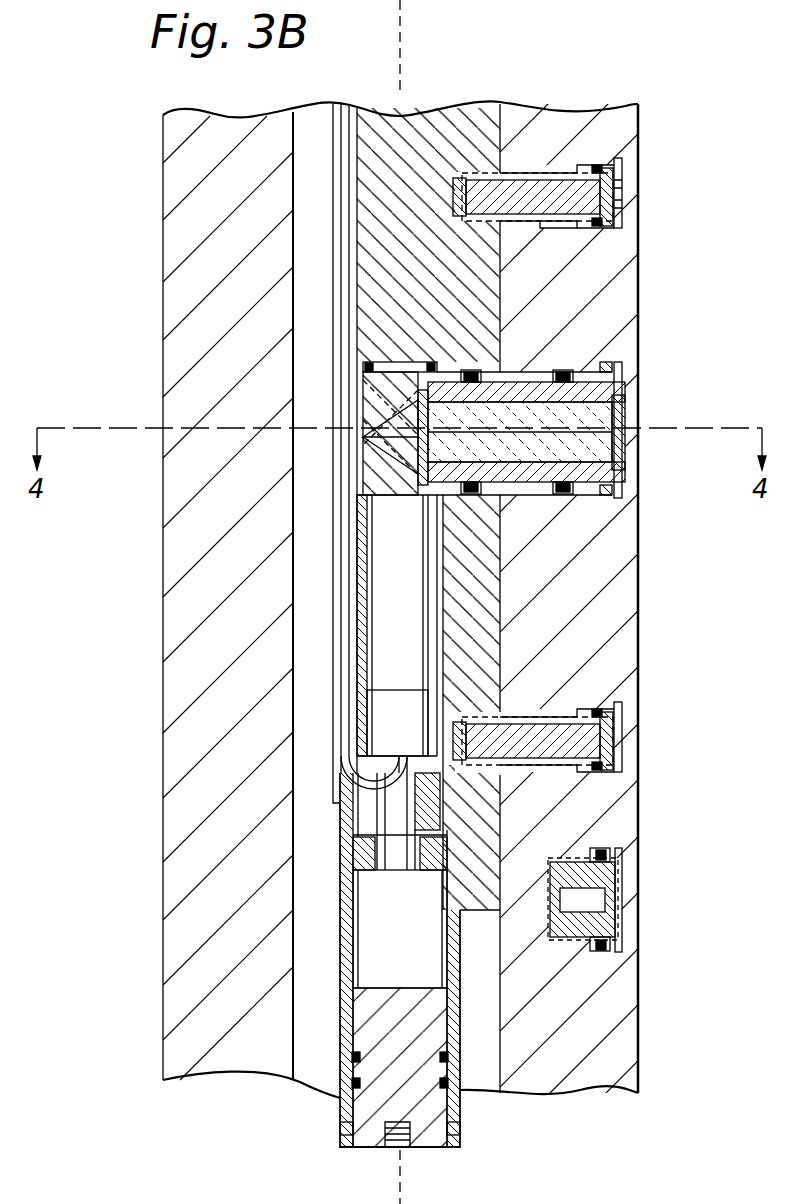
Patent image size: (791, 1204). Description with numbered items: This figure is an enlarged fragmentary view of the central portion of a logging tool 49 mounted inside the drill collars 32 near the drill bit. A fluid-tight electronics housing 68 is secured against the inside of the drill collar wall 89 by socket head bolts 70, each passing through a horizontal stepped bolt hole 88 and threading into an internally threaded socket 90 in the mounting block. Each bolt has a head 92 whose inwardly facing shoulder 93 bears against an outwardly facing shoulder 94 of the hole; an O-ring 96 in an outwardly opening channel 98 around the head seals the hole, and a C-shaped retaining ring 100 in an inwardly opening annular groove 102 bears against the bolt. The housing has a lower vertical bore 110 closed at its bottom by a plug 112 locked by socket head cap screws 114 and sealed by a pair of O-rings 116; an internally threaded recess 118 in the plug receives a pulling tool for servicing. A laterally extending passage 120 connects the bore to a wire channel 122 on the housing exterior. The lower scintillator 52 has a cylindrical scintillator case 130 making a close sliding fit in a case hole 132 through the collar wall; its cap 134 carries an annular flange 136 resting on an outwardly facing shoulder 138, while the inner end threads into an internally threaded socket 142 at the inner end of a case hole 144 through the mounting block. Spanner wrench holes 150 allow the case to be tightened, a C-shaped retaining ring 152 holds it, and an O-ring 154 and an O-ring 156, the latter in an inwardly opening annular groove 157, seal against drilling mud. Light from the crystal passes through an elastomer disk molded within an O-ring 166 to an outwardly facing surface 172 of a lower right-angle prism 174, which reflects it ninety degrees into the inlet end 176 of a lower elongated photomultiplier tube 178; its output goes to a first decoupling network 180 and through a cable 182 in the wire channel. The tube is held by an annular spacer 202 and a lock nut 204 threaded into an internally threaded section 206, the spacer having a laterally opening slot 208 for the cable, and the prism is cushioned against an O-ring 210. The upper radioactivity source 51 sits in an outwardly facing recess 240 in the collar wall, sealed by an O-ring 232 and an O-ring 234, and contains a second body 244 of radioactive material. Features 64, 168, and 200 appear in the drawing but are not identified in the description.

The drill collars 32 is at (640, 605).
The logging tool 49 is at (326, 912).
The upper radioactivity source 51 is at (655, 900).
The lower scintillator 52 is at (655, 472).
The shaft 64 is at (434, 440).
The electronics housing 68 is at (336, 940).
The socket head bolts 70 is at (525, 175).
The stepped bolt hole 88 is at (535, 222).
The drill collar wall 89 is at (620, 1063).
The internally threaded socket 90 is at (455, 195).
The bolt head 92 is at (588, 170).
The inwardly facing shoulder 93 is at (545, 232).
The outwardly facing shoulder 94 is at (625, 160).
The O-ring 96 is at (625, 175).
The outwardly opening channel 98 is at (620, 205).
The C-shaped retaining ring 100 is at (620, 183).
The inwardly opening annular groove 102 is at (625, 220).
The lower vertical bore 110 is at (420, 958).
The plug 112 is at (360, 982).
The socket head cap screws 114 is at (340, 1130).
The O-rings 116 is at (352, 1082).
The internally threaded recess 118 is at (385, 1150).
The laterally extending passage 120 is at (355, 832).
The wire channel 122 is at (355, 122).
The scintillator case 130 is at (550, 483).
The case hole 132 is at (522, 488).
The cap 134 is at (610, 440).
The annular flange 136 is at (598, 488).
The outwardly facing shoulder 138 is at (608, 378).
The internally threaded socket 142 is at (457, 543).
The case hole 144 is at (612, 362).
The spanner wrench holes 150 is at (618, 368).
The C-shaped retaining ring 152 is at (620, 380).
The O-ring 154 is at (600, 372).
The O-ring 156 is at (468, 372).
The inwardly opening annular groove 157 is at (500, 400).
The O-ring 166 is at (372, 505).
The wedge block 168 is at (365, 478).
The outwardly facing surface 172 is at (434, 403).
The lower right-angle prism 174 is at (350, 440).
The inlet end 176 is at (362, 483).
The lower elongated photomultiplier tube 178 is at (548, 607).
The first decoupling network 180 is at (390, 717).
The cable 182 is at (384, 873).
The cylinder liner 200 is at (410, 497).
The annular spacer 202 is at (465, 818).
The lock nut 204 is at (438, 880).
The internally threaded section 206 is at (470, 848).
The laterally opening slot 208 is at (355, 862).
The O-rings 210 is at (405, 362).
The O-ring 232 is at (605, 855).
The O-ring 234 is at (552, 950).
The outwardly facing recess 240 is at (630, 872).
The second body of radioactive material 244 is at (568, 898).